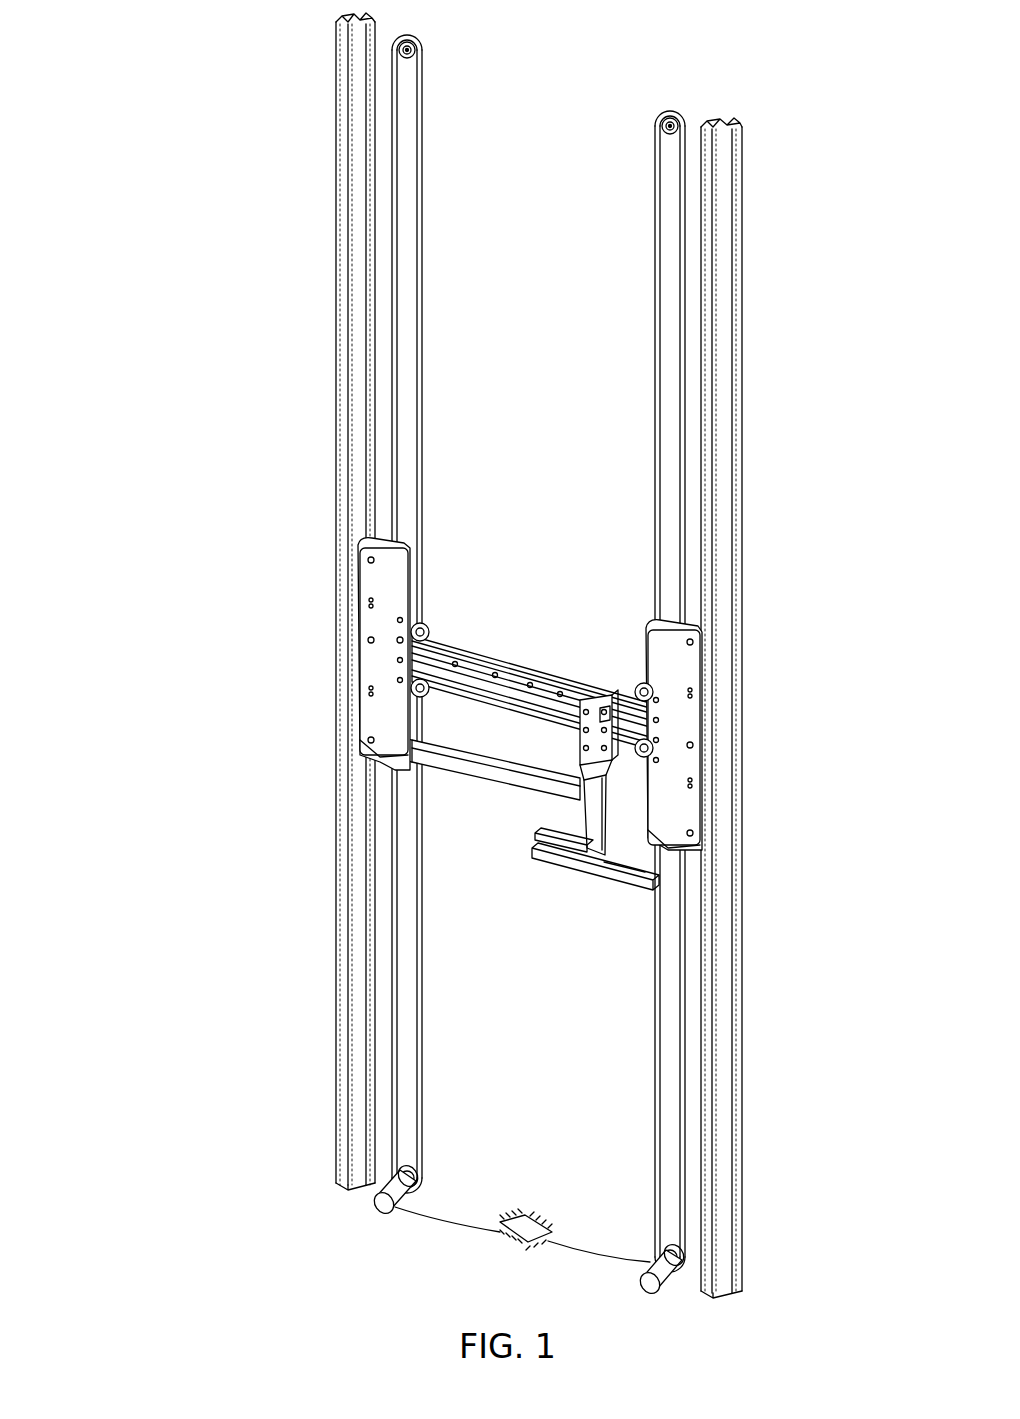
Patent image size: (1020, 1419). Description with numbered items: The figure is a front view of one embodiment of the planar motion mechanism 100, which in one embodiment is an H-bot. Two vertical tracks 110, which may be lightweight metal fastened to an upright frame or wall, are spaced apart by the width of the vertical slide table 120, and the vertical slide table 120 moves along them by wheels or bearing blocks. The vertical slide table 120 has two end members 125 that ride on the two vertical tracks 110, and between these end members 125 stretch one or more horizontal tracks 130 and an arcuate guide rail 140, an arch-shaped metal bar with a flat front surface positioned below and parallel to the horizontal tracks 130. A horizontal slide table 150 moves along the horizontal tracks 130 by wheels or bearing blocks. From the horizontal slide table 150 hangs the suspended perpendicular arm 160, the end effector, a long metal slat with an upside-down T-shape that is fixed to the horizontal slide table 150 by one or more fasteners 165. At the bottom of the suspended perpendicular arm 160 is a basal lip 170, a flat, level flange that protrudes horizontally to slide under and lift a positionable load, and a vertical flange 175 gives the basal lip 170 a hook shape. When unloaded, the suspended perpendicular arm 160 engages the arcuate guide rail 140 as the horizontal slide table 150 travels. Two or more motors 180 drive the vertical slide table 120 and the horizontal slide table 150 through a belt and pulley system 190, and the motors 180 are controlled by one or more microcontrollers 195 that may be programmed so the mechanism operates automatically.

The planar motion mechanism 100 is at (170, 50).
The vertical track 110 is at (345, 178).
The vertical slide table 120 is at (538, 597).
The end member 125 is at (375, 668).
The horizontal track 130 is at (540, 685).
The arcuate guide rail 140 is at (500, 780).
The horizontal slide table 150 is at (600, 700).
The suspended perpendicular arm 160 is at (598, 800).
The fastener 165 is at (582, 733).
The basal lip 170 is at (628, 885).
The vertical flange 175 is at (548, 852).
The motor 180 is at (385, 1195).
The belt and pulley system 190 is at (417, 45).
The microcontroller 195 is at (522, 1240).